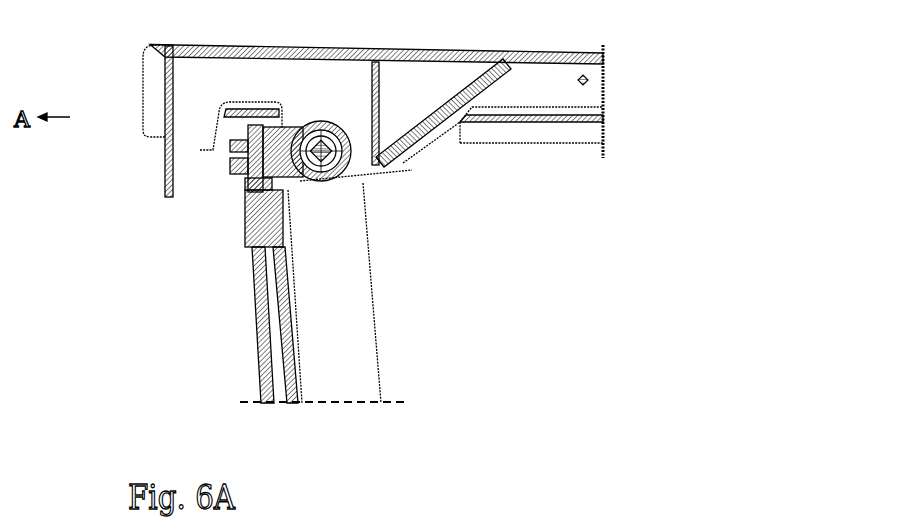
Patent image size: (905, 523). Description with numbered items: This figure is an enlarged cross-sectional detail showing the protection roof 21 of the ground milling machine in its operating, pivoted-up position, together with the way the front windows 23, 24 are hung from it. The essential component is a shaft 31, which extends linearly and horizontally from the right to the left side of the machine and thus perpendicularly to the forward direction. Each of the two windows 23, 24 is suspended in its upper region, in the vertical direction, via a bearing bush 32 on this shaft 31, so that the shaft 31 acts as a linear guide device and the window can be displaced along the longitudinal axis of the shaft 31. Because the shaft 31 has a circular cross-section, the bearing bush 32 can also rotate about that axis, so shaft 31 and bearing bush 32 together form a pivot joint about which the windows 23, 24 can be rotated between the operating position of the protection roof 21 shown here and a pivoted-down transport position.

The protection roof 21 is at (342, 53).
The window 23 is at (258, 294).
The window 24 is at (281, 287).
The shaft 31 is at (348, 152).
The bearing bush 32 is at (348, 138).